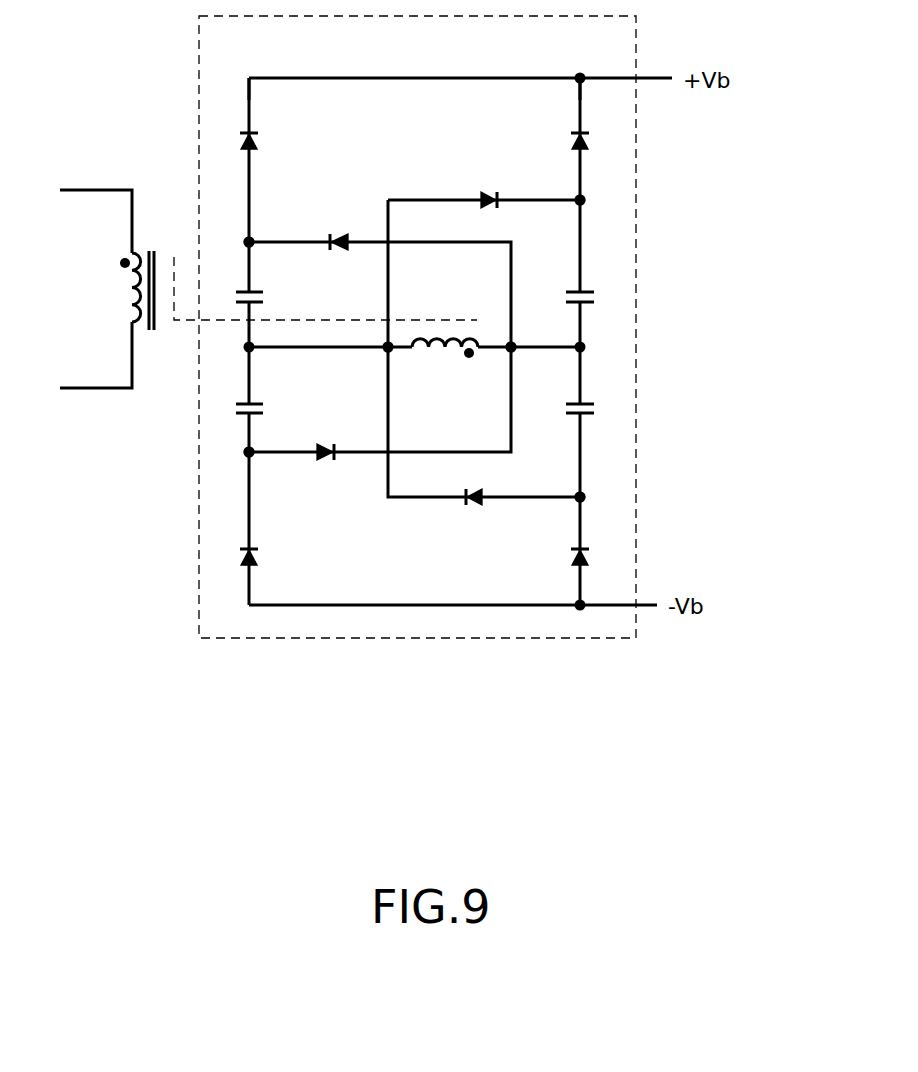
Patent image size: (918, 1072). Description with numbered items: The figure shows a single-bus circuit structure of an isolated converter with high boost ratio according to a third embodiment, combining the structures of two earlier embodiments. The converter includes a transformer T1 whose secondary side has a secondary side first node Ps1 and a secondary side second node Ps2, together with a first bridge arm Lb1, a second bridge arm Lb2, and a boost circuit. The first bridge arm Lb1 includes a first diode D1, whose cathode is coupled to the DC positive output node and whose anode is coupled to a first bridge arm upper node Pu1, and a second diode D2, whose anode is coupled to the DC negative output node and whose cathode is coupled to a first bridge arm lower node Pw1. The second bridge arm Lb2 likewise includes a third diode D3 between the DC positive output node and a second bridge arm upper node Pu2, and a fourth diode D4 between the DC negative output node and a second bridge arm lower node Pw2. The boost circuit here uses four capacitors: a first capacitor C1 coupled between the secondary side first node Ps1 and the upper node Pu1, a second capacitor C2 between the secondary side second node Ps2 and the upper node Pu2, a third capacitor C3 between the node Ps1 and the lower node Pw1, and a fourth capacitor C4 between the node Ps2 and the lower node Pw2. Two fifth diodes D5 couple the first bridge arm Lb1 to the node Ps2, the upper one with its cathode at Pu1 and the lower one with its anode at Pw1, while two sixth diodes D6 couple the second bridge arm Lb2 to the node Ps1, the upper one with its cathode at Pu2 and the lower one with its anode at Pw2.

The transformer T1 is at (109, 289).
The first diode D1 is at (231, 136).
The second diode D2 is at (235, 552).
The third diode D3 is at (596, 136).
The fourth diode D4 is at (596, 552).
The fifth diode D5 is at (333, 352).
The sixth diode D6 is at (485, 353).
The first capacitor C1 is at (233, 283).
The second capacitor C2 is at (594, 283).
The third capacitor C3 is at (233, 394).
The fourth capacitor C4 is at (594, 394).
The first bridge arm Lb1 is at (248, 97).
The second bridge arm Lb2 is at (581, 100).
The first bridge arm upper node Pu1 is at (249, 241).
The second bridge arm upper node Pu2 is at (582, 199).
The first bridge arm lower node Pw1 is at (249, 452).
The second bridge arm lower node Pw2 is at (582, 495).
The secondary side first node Ps1 is at (386, 349).
The secondary side second node Ps2 is at (509, 349).